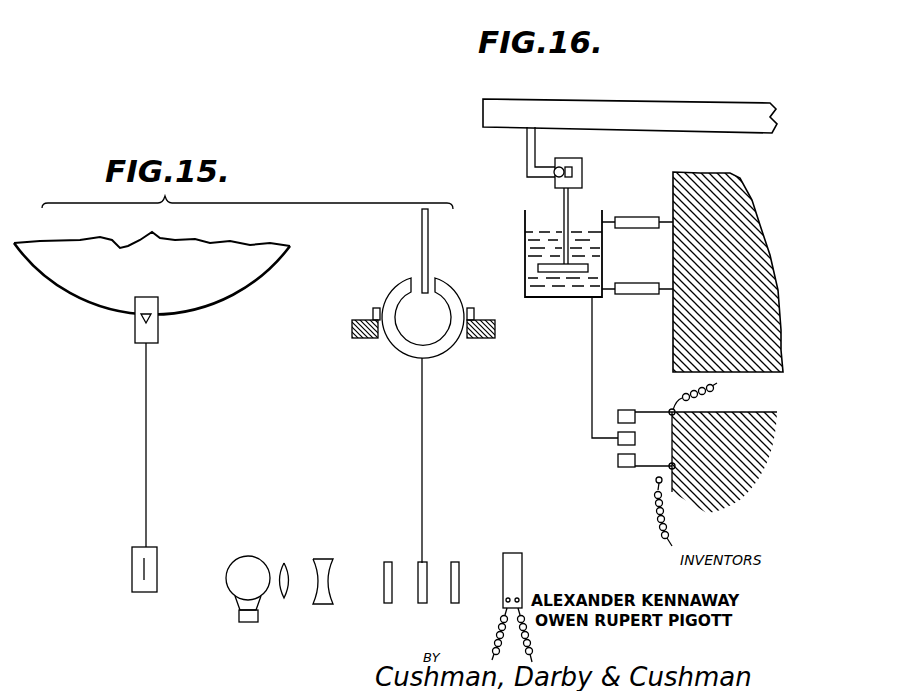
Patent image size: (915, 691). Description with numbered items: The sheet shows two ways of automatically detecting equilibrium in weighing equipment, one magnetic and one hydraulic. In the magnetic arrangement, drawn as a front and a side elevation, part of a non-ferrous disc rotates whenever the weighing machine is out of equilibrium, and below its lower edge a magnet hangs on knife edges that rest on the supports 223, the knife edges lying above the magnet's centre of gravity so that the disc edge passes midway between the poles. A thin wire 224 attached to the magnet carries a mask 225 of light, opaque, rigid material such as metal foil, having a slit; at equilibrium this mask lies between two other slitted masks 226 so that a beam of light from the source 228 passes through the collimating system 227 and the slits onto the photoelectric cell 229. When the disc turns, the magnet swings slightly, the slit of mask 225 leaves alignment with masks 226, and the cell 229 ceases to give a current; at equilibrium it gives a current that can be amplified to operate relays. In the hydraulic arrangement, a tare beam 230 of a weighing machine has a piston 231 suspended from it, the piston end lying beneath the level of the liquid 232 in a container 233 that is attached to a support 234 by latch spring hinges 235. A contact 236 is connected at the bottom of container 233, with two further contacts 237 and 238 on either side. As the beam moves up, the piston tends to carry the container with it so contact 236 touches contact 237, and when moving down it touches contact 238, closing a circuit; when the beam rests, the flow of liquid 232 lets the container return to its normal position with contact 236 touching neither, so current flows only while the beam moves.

In FIG. 15, the supports 223 is at (358, 340).
In FIG. 15, the thin wire 224 is at (146, 485).
In FIG. 15, the mask 225 is at (148, 580).
In FIG. 15, the masks 226 is at (386, 603).
In FIG. 15, the collimating system 227 is at (305, 568).
In FIG. 15, the light source 228 is at (252, 566).
In FIG. 15, the photoelectric cell 229 is at (515, 578).
In FIG. 16, the tare beam 230 is at (528, 100).
In FIG. 16, the piston 231 is at (573, 212).
In FIG. 16, the liquid 232 is at (585, 232).
In FIG. 16, the container 233 is at (596, 300).
In FIG. 16, the support 234 is at (735, 205).
In FIG. 16, the latch spring hinges 235 is at (636, 282).
In FIG. 16, the contact 236 is at (592, 400).
In FIG. 16, the contact 237 is at (647, 398).
In FIG. 16, the contact 238 is at (626, 468).